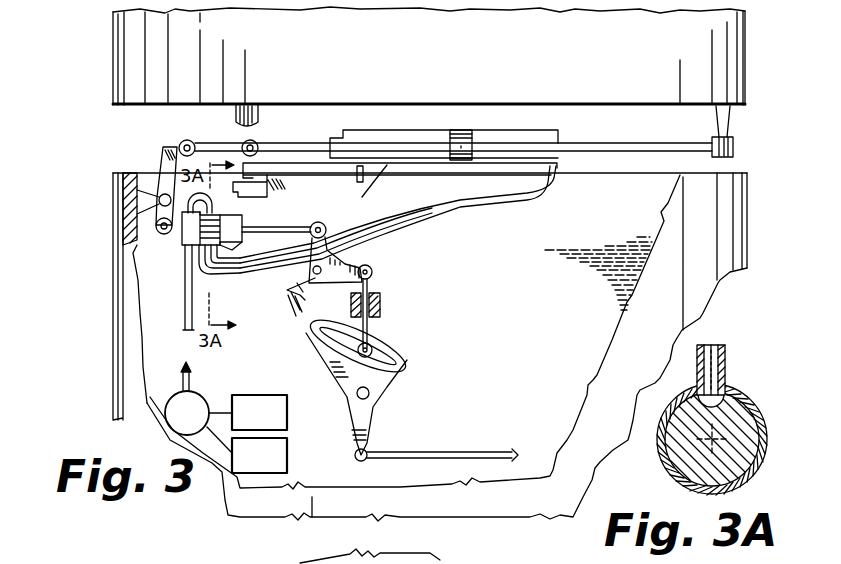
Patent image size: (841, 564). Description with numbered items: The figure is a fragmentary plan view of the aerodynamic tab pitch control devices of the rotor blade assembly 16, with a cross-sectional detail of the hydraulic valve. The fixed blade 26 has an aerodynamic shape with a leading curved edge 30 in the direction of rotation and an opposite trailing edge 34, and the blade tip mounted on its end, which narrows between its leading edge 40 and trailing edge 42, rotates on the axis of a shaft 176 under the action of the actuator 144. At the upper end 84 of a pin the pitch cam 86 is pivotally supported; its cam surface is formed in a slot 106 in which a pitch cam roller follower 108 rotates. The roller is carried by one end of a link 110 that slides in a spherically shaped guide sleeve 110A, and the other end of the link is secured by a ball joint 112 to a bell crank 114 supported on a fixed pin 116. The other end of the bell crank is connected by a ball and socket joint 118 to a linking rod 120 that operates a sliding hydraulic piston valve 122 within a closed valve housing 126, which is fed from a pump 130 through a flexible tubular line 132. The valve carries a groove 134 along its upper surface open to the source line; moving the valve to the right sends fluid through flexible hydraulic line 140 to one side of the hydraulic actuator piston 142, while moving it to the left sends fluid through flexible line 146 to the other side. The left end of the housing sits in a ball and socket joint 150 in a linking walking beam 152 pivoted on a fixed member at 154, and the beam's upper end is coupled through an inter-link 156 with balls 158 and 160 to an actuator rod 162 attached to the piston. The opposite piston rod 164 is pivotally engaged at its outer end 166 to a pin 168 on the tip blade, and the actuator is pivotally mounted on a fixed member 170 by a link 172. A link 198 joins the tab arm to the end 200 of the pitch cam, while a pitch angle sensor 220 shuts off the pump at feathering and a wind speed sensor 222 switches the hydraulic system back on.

In FIG. 3, the cartridge assembly 16 is at (103, 130).
In FIG. 3, the fixed blade 26 is at (98, 258).
In FIG. 3, the leading curved edge 30 is at (113, 195).
In FIG. 3, the trailing edge 34 is at (747, 240).
In FIG. 3, the leading edge 40 is at (113, 20).
In FIG. 3, the trailing edge 42 is at (745, 43).
In FIG. 3, the upper end 84 is at (370, 393).
In FIG. 3, the pitch cam 86 is at (372, 430).
In FIG. 3, the slot 106 is at (400, 364).
In FIG. 3, the pitch cam roller follower 108 is at (375, 350).
In FIG. 3, the link 110 is at (372, 290).
In FIG. 3, the guide sleeve 110A is at (382, 305).
In FIG. 3, the ball joint 112 is at (373, 272).
In FIG. 3, the bell crank 114 is at (340, 262).
In FIG. 3, the fixed pin 116 is at (300, 306).
In FIG. 3, the ball and socket joint 118 is at (326, 227).
In FIG. 3, the linking rod 120 is at (272, 226).
In FIG. 3A, the linking rod 120 is at (740, 437).
In FIG. 3, the sliding hydraulic piston valve 122 is at (200, 252).
In FIG. 3A, the sliding hydraulic piston valve 122 is at (743, 420).
In FIG. 3, the valve housing 126 is at (236, 282).
In FIG. 3A, the valve housing 126 is at (752, 473).
In FIG. 3, the pump 130 is at (167, 407).
In FIG. 3, the flexible tubular line 132 is at (185, 313).
In FIG. 3A, the flexible tubular line 132 is at (725, 362).
In FIG. 3A, the groove 134 is at (693, 413).
In FIG. 3, the flexible hydraulic line 140 is at (498, 196).
In FIG. 3, the hydraulic actuator piston 142 is at (462, 130).
In FIG. 3, the actuator 144 is at (530, 133).
In FIG. 3, the flexible line 146 is at (378, 176).
In FIG. 3, the ball and socket joint 150 is at (166, 235).
In FIG. 3, the linking walking beam 152 is at (163, 152).
In FIG. 3, the pivot on fixed member 154 is at (124, 243).
In FIG. 3, the inter-link 156 is at (217, 143).
In FIG. 3, the ball 158 is at (183, 141).
In FIG. 3, the ball 160 is at (258, 142).
In FIG. 3, the actuator rod 162 is at (310, 143).
In FIG. 3, the piston rod 164 is at (600, 143).
In FIG. 3, the outer end 166 is at (735, 145).
In FIG. 3, the pin 168 is at (724, 118).
In FIG. 3, the fixed member 170 is at (254, 192).
In FIG. 3, the link 172 is at (313, 178).
In FIG. 3, the shaft 176 is at (260, 104).
In FIG. 3, the link 198 is at (465, 452).
In FIG. 3, the end of pitch cam 200 is at (366, 462).
In FIG. 3, the pitch angle sensor 220 is at (287, 413).
In FIG. 3, the wind speed sensor 222 is at (287, 456).